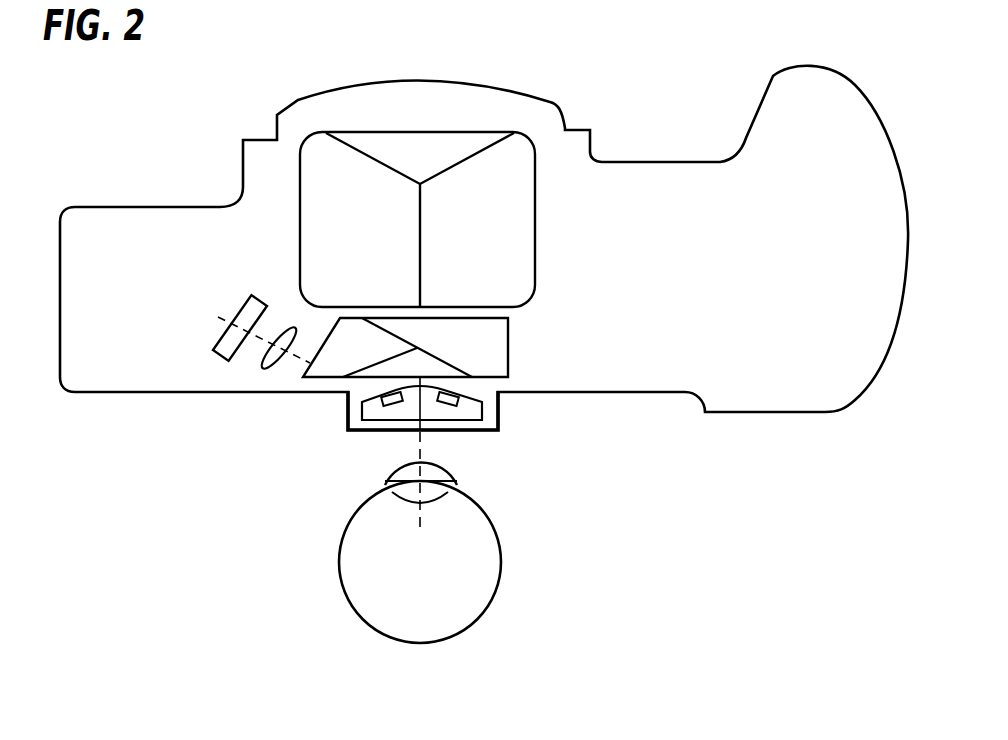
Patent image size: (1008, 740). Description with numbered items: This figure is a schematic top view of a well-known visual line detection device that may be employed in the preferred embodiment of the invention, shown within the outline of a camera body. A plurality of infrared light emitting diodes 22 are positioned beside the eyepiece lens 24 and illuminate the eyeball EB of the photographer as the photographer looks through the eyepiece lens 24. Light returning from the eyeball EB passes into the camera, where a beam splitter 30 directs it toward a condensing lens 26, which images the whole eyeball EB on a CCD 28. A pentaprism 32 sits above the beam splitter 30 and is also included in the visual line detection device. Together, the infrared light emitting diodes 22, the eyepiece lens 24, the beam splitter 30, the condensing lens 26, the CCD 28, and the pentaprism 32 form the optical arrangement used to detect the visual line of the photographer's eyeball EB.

The infrared light emitting diodes 22 is at (440, 408).
The eyepiece lens 24 is at (468, 408).
The condensing lens 26 is at (270, 370).
The CCD 28 is at (228, 362).
The beam splitter 30 is at (482, 333).
The pentaprism 32 is at (427, 155).
The eyeball EB is at (468, 603).